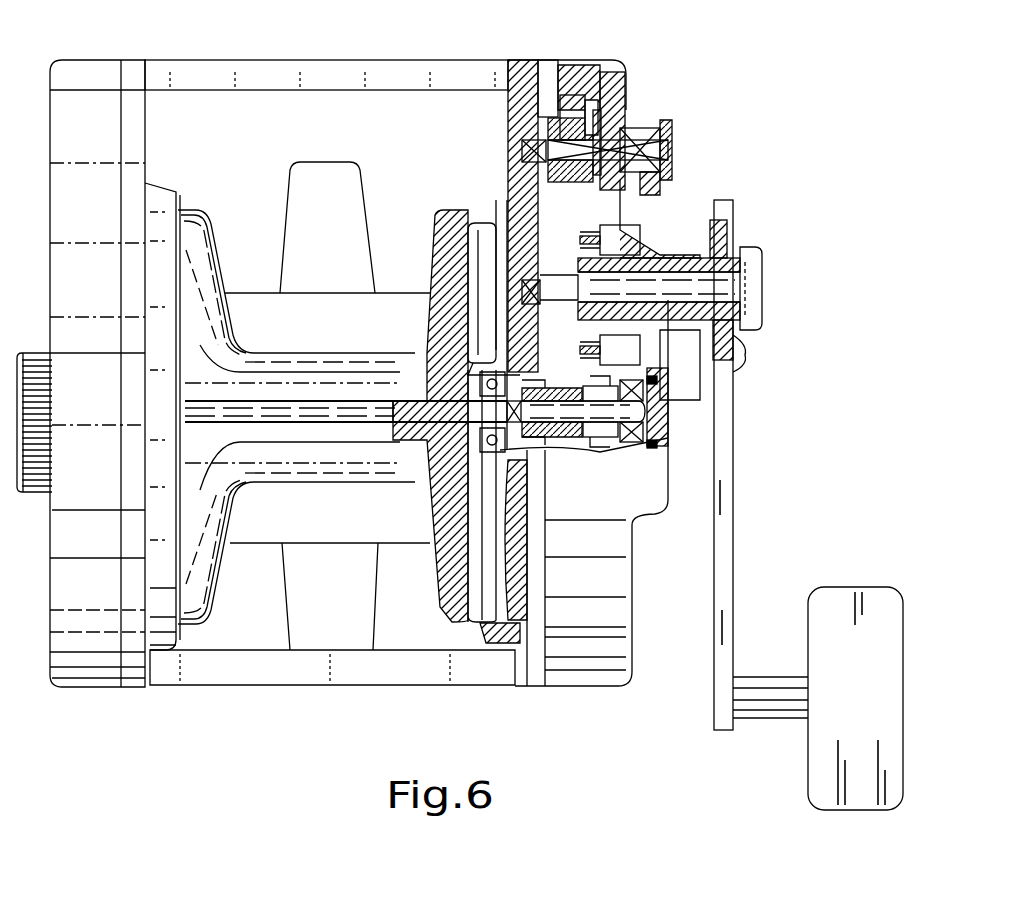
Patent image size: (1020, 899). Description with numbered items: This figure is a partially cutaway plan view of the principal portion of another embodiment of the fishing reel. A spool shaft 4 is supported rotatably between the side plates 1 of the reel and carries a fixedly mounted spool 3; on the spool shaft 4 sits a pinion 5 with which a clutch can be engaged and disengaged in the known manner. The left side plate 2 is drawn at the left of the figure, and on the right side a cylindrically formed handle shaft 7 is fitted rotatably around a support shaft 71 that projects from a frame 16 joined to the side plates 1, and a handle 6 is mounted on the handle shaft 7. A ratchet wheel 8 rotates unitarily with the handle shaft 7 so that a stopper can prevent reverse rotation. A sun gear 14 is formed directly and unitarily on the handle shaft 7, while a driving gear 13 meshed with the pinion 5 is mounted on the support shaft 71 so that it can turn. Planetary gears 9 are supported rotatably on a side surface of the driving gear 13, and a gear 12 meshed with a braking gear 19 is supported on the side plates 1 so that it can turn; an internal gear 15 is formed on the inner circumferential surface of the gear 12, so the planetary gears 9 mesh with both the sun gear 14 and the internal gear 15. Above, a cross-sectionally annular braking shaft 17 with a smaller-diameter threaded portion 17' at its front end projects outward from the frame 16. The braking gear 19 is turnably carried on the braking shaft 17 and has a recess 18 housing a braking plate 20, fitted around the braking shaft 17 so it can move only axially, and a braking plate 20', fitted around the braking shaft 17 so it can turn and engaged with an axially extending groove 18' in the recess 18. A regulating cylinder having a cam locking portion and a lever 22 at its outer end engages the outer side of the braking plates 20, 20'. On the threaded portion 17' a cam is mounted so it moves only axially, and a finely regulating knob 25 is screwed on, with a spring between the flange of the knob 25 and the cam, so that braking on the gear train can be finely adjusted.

The side plates 1 is at (541, 75).
The left side plate 2 is at (90, 72).
The spool 3 is at (248, 350).
The spool shaft 4 is at (415, 420).
The pinion 5 is at (556, 437).
The handle 6 is at (733, 477).
The handle shaft 7 is at (705, 345).
The ratchet wheel 8 is at (625, 262).
The planetary gears 9 is at (632, 218).
The gear 12 is at (594, 380).
The driving gear 13 is at (545, 210).
The sun gear 14 is at (645, 248).
The internal gear 15 is at (612, 377).
The frame 16 is at (514, 75).
The braking shaft 17 is at (507, 140).
The smaller-diameter threaded portion 17' is at (669, 150).
The recess 18 is at (530, 136).
The axially extending groove 18' is at (630, 113).
The braking gear 19 is at (600, 98).
The braking plate 20 is at (609, 119).
The braking plate 20' is at (575, 73).
The lever 22 is at (658, 186).
The finely regulating knob 25 is at (668, 125).
The support shaft 71 is at (746, 288).